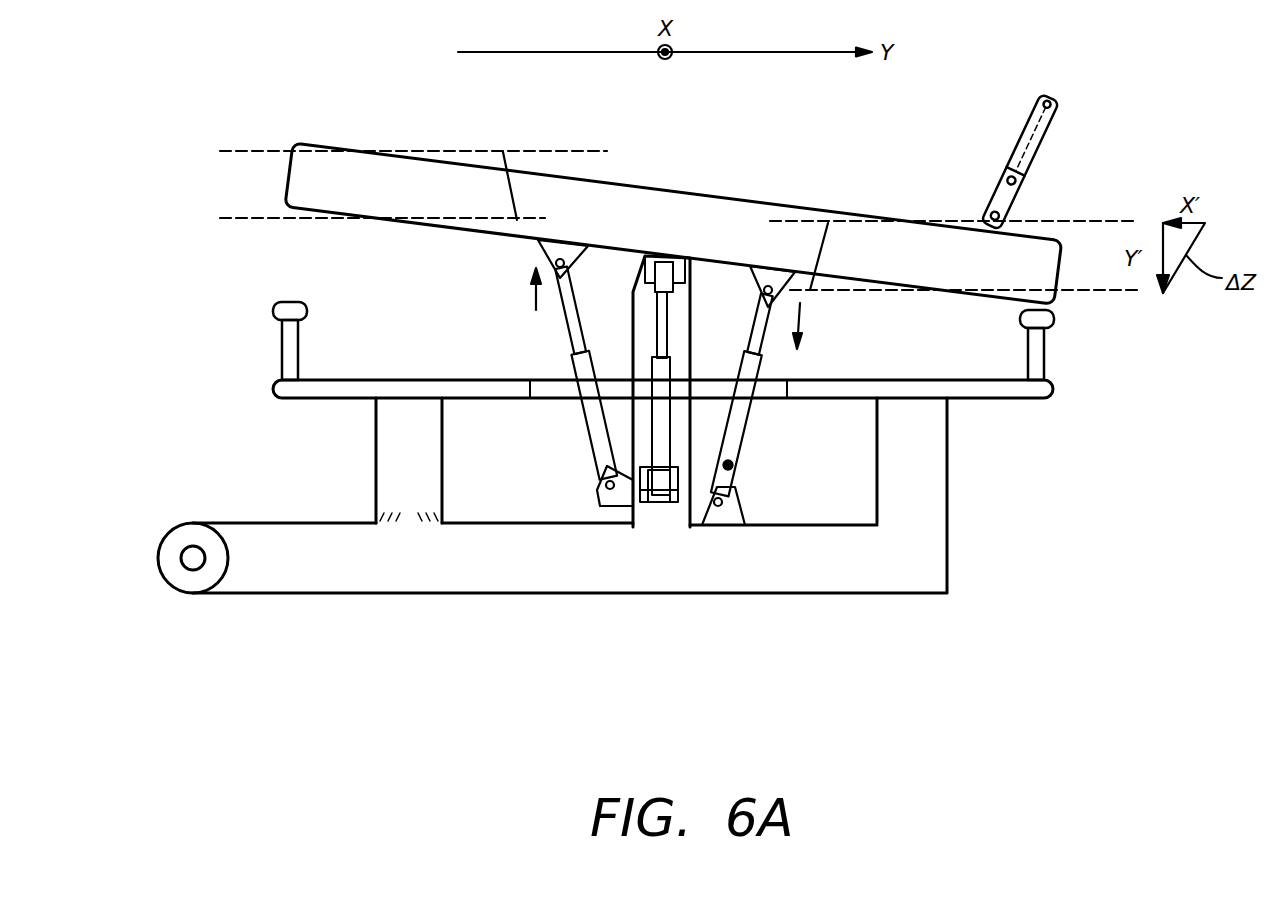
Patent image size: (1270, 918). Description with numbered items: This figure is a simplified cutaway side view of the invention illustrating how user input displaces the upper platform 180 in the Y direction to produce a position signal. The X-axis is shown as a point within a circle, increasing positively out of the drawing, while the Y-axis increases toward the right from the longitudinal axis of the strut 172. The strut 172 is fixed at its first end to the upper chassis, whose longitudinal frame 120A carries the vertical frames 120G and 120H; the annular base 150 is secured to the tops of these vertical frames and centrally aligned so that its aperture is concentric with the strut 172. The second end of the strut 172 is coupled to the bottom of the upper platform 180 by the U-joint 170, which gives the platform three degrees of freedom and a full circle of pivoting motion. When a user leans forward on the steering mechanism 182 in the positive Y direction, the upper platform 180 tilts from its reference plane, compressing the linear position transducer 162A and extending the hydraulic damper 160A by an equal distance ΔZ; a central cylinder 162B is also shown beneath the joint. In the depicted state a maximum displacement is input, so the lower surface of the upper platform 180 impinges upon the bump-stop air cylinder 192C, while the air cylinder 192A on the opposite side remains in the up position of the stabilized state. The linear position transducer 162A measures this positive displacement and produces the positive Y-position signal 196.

The upper platform 180 is at (289, 168).
The steering mechanism 182 is at (1058, 124).
The U-joint 170 is at (665, 266).
The strut 172 is at (658, 482).
The central cylinder 162B is at (660, 437).
The hydraulic damper 160A is at (582, 369).
The linear position transducer 162A is at (753, 369).
The annular base 150 is at (278, 386).
The air cylinder 192A is at (279, 352).
The bump-stop air cylinder 192C is at (1052, 352).
The vertical frame 120G is at (375, 489).
The vertical frame 120H is at (948, 495).
The longitudinal frame 120A is at (920, 567).
The Y-position signal 196 is at (733, 465).